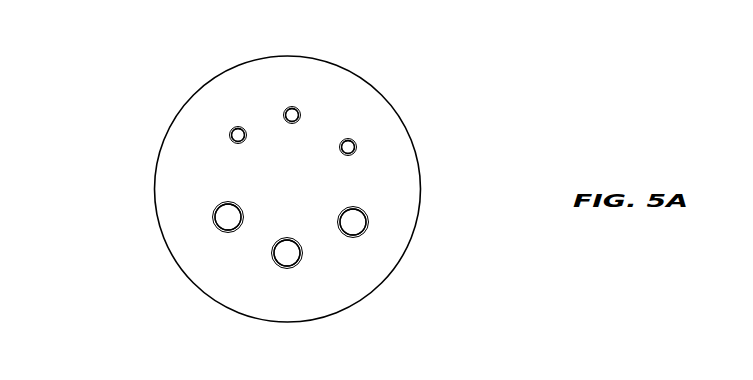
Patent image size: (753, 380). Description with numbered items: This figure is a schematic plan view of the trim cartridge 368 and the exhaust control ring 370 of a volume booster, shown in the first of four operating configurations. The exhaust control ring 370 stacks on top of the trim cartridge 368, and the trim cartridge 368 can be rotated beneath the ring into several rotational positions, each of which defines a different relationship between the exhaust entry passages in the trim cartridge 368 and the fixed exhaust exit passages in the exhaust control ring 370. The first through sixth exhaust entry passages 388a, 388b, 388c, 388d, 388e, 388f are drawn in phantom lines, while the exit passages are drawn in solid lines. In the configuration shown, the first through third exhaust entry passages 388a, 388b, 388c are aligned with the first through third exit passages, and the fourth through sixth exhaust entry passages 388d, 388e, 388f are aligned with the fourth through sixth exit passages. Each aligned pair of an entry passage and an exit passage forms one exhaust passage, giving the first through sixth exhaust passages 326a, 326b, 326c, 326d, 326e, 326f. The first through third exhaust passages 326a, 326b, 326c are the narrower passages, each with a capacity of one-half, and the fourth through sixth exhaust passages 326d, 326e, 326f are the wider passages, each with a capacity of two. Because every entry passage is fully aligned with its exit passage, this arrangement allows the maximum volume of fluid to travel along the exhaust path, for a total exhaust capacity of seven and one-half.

The exhaust control ring 370 is at (312, 189).
The trim cartridge 368 is at (393, 177).
The first exhaust passage 326a is at (359, 145).
The second exhaust passage 326b is at (301, 107).
The third exhaust passage 326c is at (231, 140).
The fourth exhaust passage 326d is at (213, 213).
The fifth exhaust passage 326e is at (276, 274).
The sixth exhaust passage 326f is at (367, 237).
The first exhaust entry passage 388a is at (354, 140).
The second exhaust entry passage 388b is at (290, 104).
The third exhaust entry passage 388c is at (229, 124).
The fourth exhaust entry passage 388d is at (214, 233).
The fifth exhaust entry passage 388e is at (286, 269).
The sixth exhaust entry passage 388f is at (368, 215).